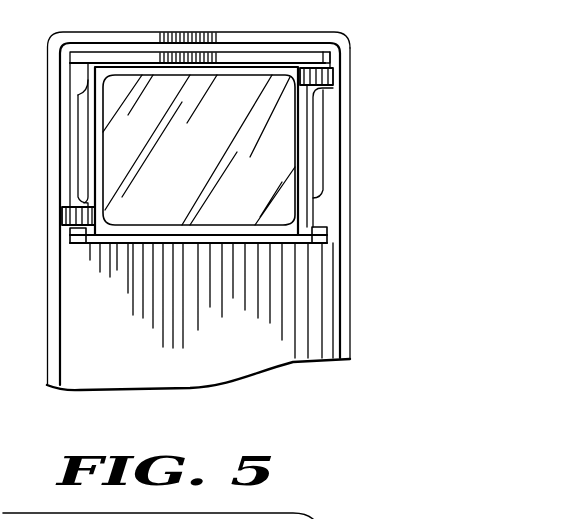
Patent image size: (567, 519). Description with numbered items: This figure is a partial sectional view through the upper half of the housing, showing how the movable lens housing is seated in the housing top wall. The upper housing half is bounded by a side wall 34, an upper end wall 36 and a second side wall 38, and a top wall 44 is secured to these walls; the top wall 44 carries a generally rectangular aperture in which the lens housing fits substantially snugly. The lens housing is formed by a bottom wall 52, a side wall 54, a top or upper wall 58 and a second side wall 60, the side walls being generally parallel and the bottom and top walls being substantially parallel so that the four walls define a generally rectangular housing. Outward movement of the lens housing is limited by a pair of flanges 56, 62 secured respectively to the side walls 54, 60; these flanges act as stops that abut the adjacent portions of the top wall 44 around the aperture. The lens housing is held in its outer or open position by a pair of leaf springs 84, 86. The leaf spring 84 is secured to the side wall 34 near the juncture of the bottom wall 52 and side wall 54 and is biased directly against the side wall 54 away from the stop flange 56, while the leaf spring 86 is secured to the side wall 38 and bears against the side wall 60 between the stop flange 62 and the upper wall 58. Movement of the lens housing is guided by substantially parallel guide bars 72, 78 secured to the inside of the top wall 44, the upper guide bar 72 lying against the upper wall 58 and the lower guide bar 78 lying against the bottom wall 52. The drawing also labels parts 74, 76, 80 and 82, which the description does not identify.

The side wall 34 is at (53, 307).
The upper end wall 36 is at (143, 34).
The second side wall 38 is at (343, 220).
The top wall 44 is at (343, 308).
The bottom wall 52 is at (176, 232).
The side wall 54 is at (88, 80).
The flange 56 is at (80, 137).
The top or upper wall 58 is at (257, 62).
The second side wall 60 is at (308, 210).
The flange 62 is at (315, 127).
The upper guide bar 72 is at (105, 52).
The strip left end 74 is at (72, 70).
The strip right end 76 is at (322, 63).
The lower guide bar 78 is at (116, 245).
The left lower fastener 80 is at (72, 233).
The right lower fastener 82 is at (327, 233).
The leaf spring 84 is at (72, 204).
The leaf spring 86 is at (340, 75).